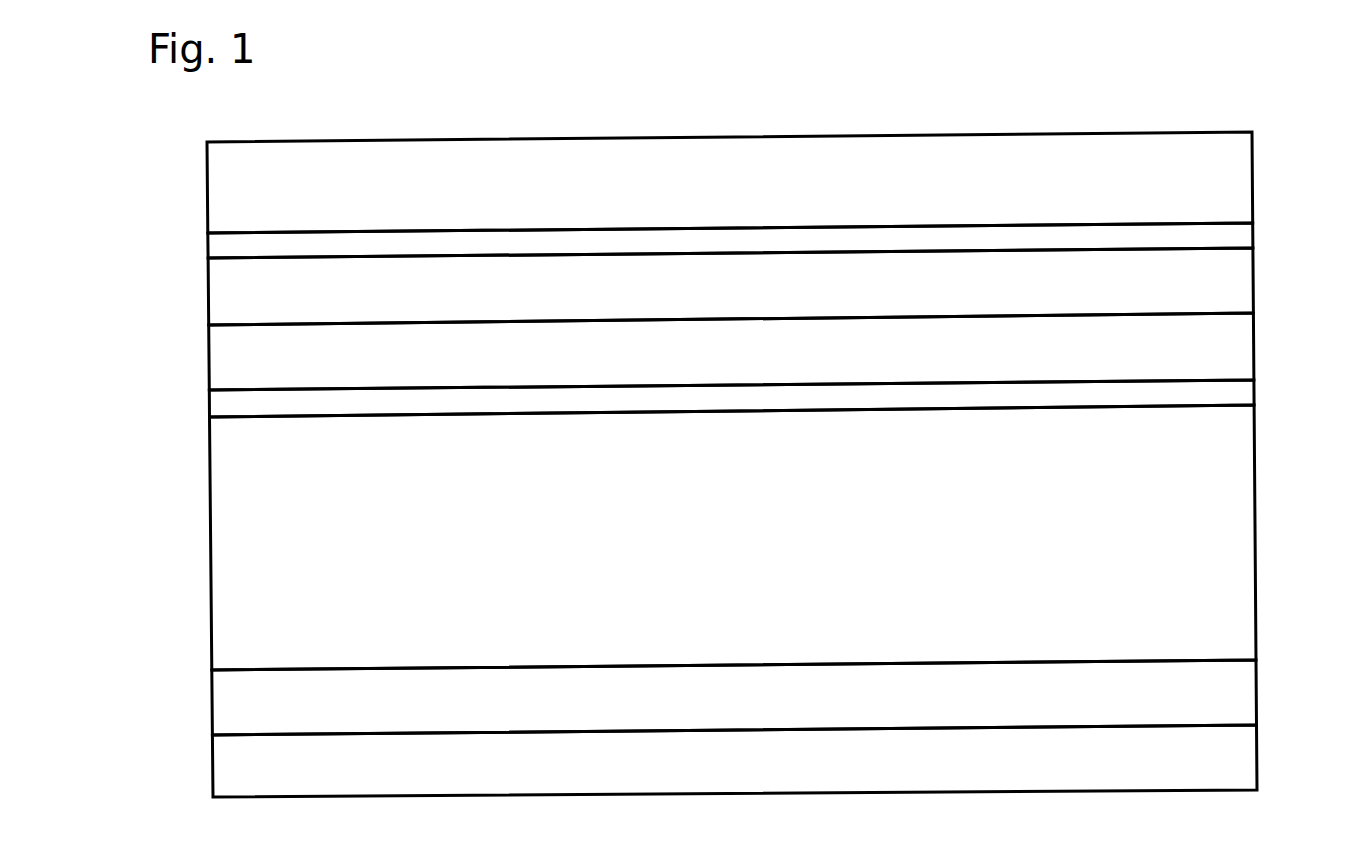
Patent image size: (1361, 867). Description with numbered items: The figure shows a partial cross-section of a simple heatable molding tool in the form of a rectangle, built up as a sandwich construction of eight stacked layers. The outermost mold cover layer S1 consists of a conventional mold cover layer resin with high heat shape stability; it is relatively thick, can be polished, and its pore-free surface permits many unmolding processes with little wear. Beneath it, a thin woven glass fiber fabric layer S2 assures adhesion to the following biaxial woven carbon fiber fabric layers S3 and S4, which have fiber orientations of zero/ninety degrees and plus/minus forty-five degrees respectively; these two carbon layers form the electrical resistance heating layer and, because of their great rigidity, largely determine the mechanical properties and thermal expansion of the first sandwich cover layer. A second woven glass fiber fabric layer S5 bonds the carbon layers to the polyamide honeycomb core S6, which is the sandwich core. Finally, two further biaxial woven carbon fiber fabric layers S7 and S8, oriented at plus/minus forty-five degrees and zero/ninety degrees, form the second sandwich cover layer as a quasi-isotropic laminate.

The mold cover layer S1 is at (1200, 176).
The woven glass fiber fabric layer S2 is at (247, 248).
The biaxial woven carbon fiber fabric layer S3 is at (1200, 282).
The biaxial woven carbon fiber fabric layer S4 is at (1202, 337).
The woven glass fiber fabric layer S5 is at (250, 402).
The polyamide honeycomb core S6 is at (1198, 533).
The biaxial woven carbon fiber fabric layer S7 is at (1210, 678).
The biaxial woven carbon fiber fabric layer S8 is at (1203, 768).